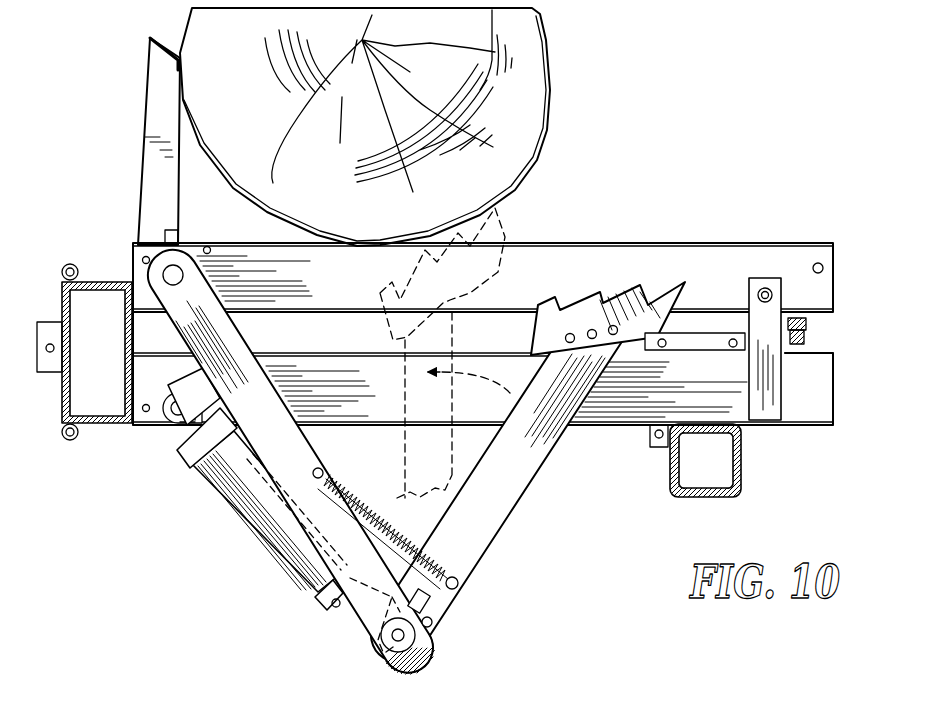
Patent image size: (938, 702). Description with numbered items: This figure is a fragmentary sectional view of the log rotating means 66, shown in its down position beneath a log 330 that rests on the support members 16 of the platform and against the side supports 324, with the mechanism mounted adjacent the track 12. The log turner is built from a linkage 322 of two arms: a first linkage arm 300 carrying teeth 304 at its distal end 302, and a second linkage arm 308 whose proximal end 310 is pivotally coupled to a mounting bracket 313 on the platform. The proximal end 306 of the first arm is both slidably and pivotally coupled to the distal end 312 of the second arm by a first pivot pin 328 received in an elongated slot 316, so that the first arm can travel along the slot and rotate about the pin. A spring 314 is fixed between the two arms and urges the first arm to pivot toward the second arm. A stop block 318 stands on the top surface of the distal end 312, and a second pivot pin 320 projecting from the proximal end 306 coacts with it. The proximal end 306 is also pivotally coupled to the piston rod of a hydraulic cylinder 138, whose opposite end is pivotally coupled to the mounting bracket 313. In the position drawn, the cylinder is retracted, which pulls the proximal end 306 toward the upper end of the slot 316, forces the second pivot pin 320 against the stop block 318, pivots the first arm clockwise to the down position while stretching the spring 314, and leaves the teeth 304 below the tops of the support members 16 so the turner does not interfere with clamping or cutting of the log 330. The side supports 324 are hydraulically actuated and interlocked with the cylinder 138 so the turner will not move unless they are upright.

The track 12 is at (104, 431).
The support members 16 is at (737, 245).
The log rotating means 66 is at (547, 535).
The hydraulic cylinder 138 is at (288, 556).
The first linkage arm 300 is at (538, 450).
The distal end 302 is at (622, 348).
The teeth 304 is at (648, 290).
The proximal end 306 is at (416, 654).
The second linkage arm 308 is at (230, 475).
The proximal end 310 is at (145, 268).
The distal end 312 is at (390, 668).
The mounting bracket 313 is at (153, 430).
The spring 314 is at (363, 503).
The elongated slot 316 is at (432, 658).
The stop block 318 is at (424, 603).
The second pivot pin 320 is at (433, 622).
The linkage 322 is at (331, 614).
The side supports 324 is at (152, 175).
The first pivot pin 328 is at (381, 654).
The log 330 is at (530, 82).